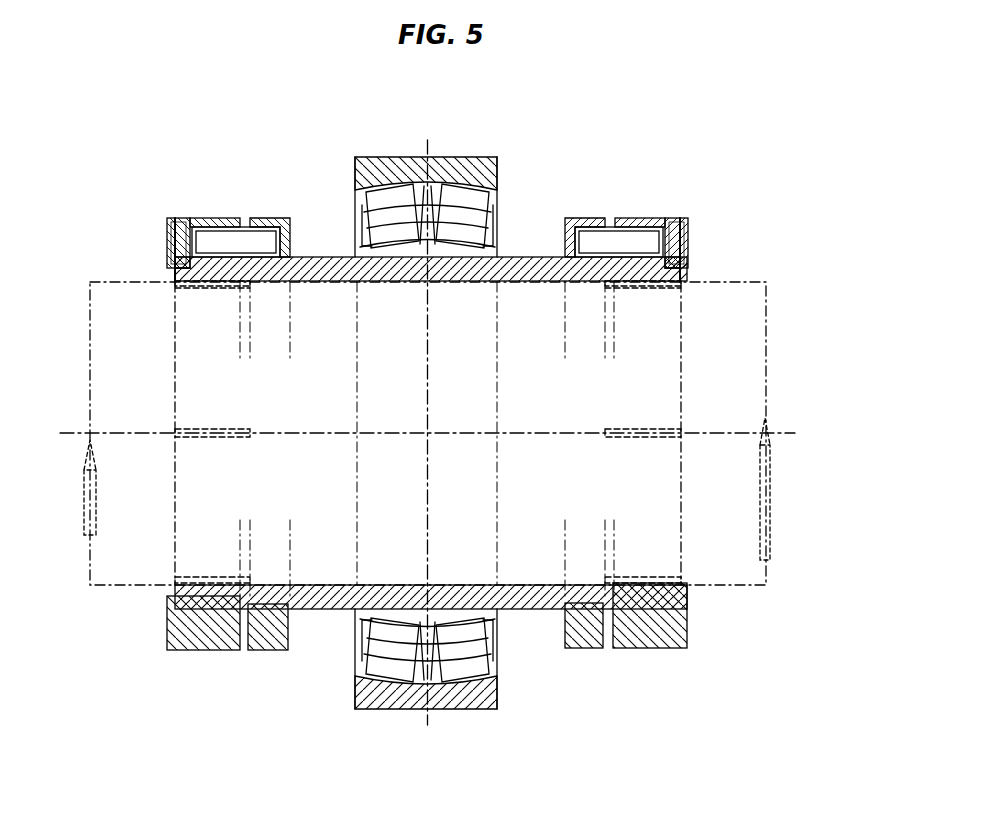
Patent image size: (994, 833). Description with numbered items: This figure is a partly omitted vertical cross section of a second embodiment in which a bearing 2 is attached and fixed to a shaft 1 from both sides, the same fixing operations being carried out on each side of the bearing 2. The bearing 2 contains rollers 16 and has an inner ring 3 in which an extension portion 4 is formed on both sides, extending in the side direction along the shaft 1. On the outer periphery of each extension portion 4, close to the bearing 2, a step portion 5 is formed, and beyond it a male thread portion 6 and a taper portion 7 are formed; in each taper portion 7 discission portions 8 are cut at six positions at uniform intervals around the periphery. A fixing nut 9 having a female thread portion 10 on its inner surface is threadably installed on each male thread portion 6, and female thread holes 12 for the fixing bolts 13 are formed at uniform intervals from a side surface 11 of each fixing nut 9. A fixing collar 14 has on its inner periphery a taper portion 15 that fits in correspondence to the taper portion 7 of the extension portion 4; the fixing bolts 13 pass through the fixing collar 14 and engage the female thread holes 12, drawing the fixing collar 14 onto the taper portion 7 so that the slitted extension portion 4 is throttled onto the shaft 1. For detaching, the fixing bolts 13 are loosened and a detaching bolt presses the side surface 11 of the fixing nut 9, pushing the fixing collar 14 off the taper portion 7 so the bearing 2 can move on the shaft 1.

The shaft 1 is at (745, 497).
The bearing 2 is at (373, 155).
The inner ring 3 is at (462, 198).
The extension portion 4 is at (325, 257).
The step portion 5 is at (290, 607).
The male thread portion 6 is at (262, 258).
The taper portion 7 is at (172, 268).
The discission portions 8 is at (177, 434).
The fixing nut 9 is at (246, 226).
The female thread portion 10 is at (428, 338).
The side surface 11 is at (243, 606).
The female thread holes 12 is at (285, 225).
The fixing bolts 13 is at (172, 218).
The fixing collar 14 is at (208, 218).
The taper portion 15 is at (409, 245).
The rollers 16 is at (455, 637).